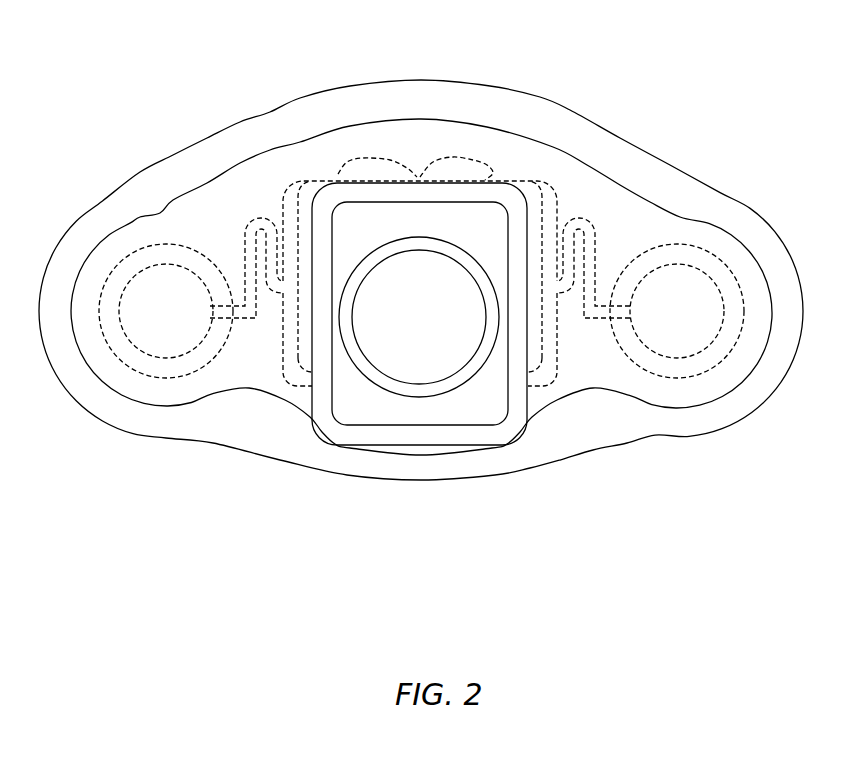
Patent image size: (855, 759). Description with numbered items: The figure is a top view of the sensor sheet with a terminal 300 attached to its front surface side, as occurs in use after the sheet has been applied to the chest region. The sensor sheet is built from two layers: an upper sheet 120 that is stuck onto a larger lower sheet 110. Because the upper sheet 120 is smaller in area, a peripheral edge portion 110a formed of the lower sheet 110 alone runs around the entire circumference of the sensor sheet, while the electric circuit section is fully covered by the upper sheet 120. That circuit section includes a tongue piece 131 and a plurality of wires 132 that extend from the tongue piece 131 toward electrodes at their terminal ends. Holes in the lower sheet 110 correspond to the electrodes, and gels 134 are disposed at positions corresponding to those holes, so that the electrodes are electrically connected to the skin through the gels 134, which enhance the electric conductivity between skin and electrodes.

The lower sheet 110 is at (414, 320).
The peripheral edge portion 110a is at (74, 224).
The upper sheet 120 is at (118, 358).
The tongue piece 131 is at (458, 157).
The wires 132 is at (257, 217).
The gels 134 is at (165, 243).
The terminal 300 is at (340, 440).